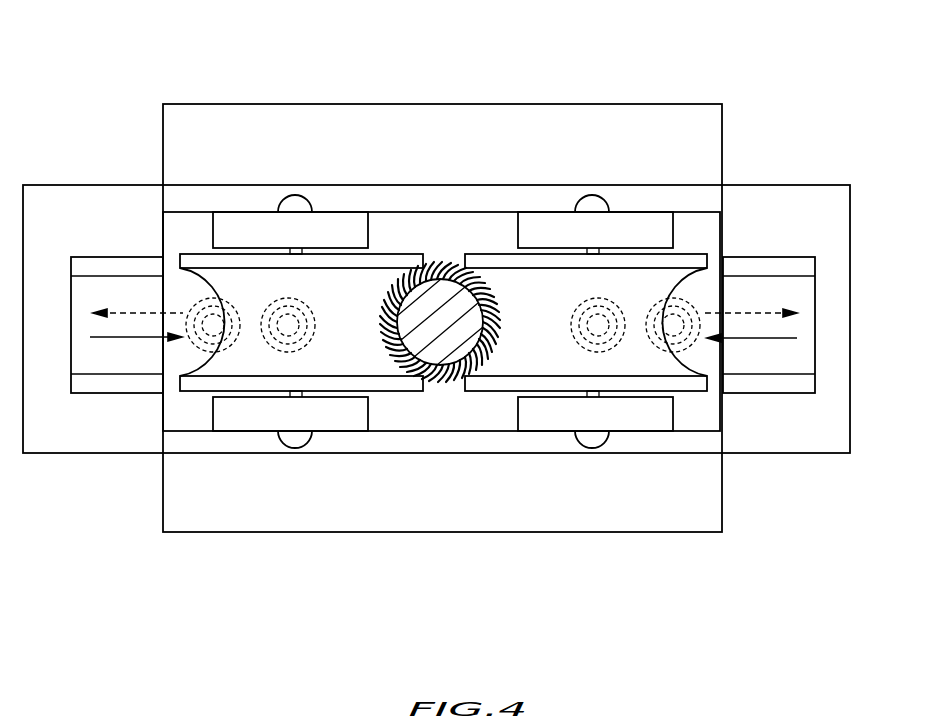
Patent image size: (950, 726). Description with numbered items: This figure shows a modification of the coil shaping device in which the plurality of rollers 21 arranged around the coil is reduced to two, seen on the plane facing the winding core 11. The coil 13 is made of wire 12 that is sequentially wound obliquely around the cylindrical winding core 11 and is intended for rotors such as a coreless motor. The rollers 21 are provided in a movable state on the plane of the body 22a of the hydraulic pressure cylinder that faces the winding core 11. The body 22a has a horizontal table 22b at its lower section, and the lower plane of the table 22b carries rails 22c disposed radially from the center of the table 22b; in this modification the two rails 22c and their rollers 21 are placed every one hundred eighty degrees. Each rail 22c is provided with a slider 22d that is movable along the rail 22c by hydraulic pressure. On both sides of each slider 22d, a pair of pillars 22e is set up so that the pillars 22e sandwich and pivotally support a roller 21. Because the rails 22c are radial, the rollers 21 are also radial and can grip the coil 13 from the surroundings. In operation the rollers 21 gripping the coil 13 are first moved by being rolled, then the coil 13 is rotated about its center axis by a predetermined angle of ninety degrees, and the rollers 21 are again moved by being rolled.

The winding core 11 is at (432, 330).
The wire 12 is at (443, 372).
The coil 13 is at (445, 247).
The roller 21 is at (340, 330).
The body 22a is at (537, 103).
The table 22b is at (740, 182).
The rail 22c is at (97, 253).
The slider 22d is at (688, 237).
The pillar 22e is at (249, 210).